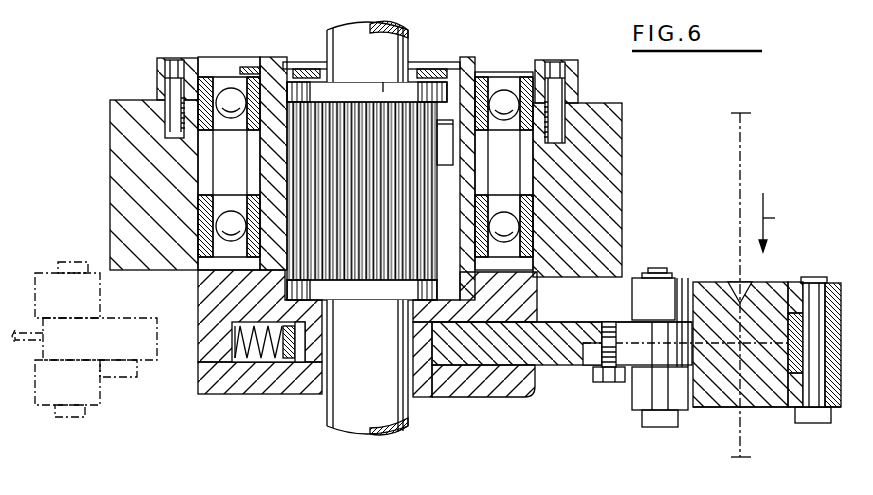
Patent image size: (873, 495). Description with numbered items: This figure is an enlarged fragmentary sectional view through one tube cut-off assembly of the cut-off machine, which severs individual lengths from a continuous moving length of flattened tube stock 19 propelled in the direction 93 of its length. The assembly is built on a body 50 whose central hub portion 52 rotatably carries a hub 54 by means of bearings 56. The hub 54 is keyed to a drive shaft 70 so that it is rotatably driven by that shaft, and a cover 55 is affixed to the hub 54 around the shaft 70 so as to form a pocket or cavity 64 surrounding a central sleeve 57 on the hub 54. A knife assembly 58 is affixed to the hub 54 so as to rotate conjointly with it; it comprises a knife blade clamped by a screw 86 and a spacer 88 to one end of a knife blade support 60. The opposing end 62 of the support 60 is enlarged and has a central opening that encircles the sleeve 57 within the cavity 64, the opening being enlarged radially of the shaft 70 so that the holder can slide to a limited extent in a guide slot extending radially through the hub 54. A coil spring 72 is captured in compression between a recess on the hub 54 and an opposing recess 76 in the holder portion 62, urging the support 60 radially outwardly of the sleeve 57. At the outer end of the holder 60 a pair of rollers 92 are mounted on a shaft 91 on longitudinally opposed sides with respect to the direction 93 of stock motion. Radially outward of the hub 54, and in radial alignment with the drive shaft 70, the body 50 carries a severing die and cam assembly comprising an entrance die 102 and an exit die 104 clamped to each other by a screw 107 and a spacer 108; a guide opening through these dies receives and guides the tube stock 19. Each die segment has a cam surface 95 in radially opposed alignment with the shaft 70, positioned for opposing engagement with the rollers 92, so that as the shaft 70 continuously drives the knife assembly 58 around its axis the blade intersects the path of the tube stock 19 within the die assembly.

The tube stock 19 is at (736, 157).
The body 50 is at (591, 102).
The central hub portion 52 is at (122, 197).
The hub 54 is at (200, 307).
The cover 55 is at (201, 390).
The bearings 56 is at (233, 93).
The central sleeve 57 is at (424, 362).
The knife assembly 58 is at (558, 320).
The knife blade support 60 is at (555, 355).
The opposing end of support 62 is at (500, 365).
The cavity 64 is at (257, 352).
The drive shaft 70 is at (406, 45).
The coil spring 72 is at (272, 348).
The recess 76 is at (284, 343).
The screw 86 is at (606, 384).
The spacer 88 is at (620, 384).
The shaft 91 is at (660, 427).
The rollers 92 is at (636, 285).
The direction of motion of stock 93 is at (782, 222).
The cam surface 95 is at (680, 310).
The entrance die 102 is at (777, 293).
The exit die 104 is at (717, 409).
The screw 107 is at (811, 425).
The spacer 108 is at (793, 378).